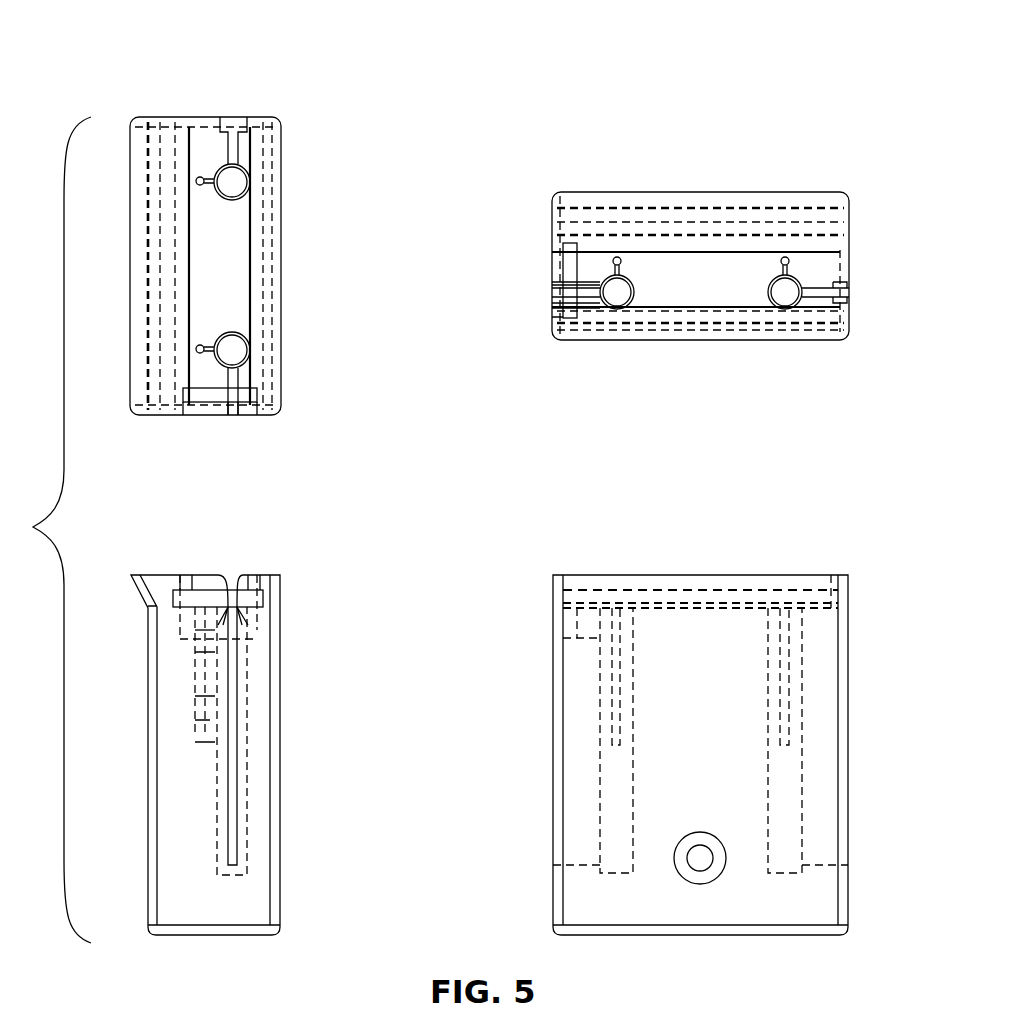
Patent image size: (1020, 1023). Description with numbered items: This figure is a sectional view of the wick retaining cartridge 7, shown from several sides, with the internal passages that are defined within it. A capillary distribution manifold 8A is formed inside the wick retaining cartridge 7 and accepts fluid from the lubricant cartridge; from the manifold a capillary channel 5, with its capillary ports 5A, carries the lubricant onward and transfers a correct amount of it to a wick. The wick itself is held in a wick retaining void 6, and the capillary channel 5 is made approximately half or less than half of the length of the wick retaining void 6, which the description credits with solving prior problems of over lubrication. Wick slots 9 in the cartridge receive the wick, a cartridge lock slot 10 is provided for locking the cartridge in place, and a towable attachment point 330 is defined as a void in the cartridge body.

The wick retaining cartridge 7 is at (282, 265).
The wick slots 9 is at (232, 119).
The cartridge lock slot 10 is at (565, 252).
The wick retaining void 6 is at (615, 297).
The capillary distribution manifold 8A is at (199, 628).
The capillary ports 5A is at (203, 652).
The capillary channel 5 is at (197, 720).
The towable attachment point 330 is at (700, 832).